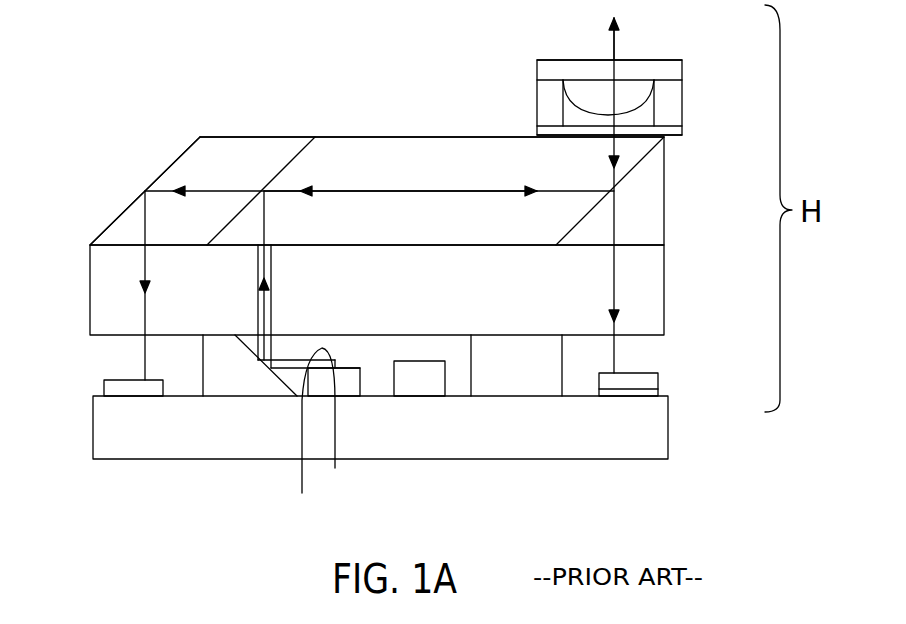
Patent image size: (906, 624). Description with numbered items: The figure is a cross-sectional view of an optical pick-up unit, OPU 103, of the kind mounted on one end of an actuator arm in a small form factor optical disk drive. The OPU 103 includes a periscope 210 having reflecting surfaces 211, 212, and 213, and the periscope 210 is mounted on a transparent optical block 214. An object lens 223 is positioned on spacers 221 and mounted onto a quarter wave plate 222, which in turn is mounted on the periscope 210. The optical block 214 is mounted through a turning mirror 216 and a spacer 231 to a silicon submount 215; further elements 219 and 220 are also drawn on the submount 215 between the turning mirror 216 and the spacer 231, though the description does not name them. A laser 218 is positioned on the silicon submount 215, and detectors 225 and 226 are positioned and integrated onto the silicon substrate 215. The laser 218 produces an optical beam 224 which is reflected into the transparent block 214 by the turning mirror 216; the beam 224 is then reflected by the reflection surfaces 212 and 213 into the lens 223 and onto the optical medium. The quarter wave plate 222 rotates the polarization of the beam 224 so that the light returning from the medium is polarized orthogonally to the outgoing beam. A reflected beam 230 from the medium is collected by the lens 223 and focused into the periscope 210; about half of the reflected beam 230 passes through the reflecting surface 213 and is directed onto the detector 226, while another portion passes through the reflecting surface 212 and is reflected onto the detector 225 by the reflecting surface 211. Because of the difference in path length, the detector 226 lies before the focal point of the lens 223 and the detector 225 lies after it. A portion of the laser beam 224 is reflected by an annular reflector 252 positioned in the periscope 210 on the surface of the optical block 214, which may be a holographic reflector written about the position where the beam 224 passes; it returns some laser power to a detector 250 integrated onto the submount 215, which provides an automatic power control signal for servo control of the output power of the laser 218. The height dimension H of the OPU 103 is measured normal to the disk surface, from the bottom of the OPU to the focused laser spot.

The optical pick-up unit 103 is at (98, 146).
The periscope 210 is at (116, 218).
The reflecting surface 211 is at (136, 192).
The reflecting surface 212 is at (293, 160).
The reflecting surface 213 is at (618, 178).
The transparent optical block 214 is at (665, 318).
The silicon submount 215 is at (93, 425).
The turning mirror 216 is at (242, 388).
The laser 218 is at (339, 435).
The photodetector 219 is at (425, 387).
The photodetector 220 is at (587, 385).
The spacers 221 is at (682, 95).
The quarter wave plate 222 is at (682, 128).
The object lens 223 is at (650, 65).
The optical beam 224 is at (534, 188).
The detector 225 is at (610, 26).
The detector 226 is at (658, 381).
The reflected beam 230 is at (217, 190).
The spacer 231 is at (527, 385).
The detector 250 is at (309, 439).
The annular reflector 252 is at (290, 232).